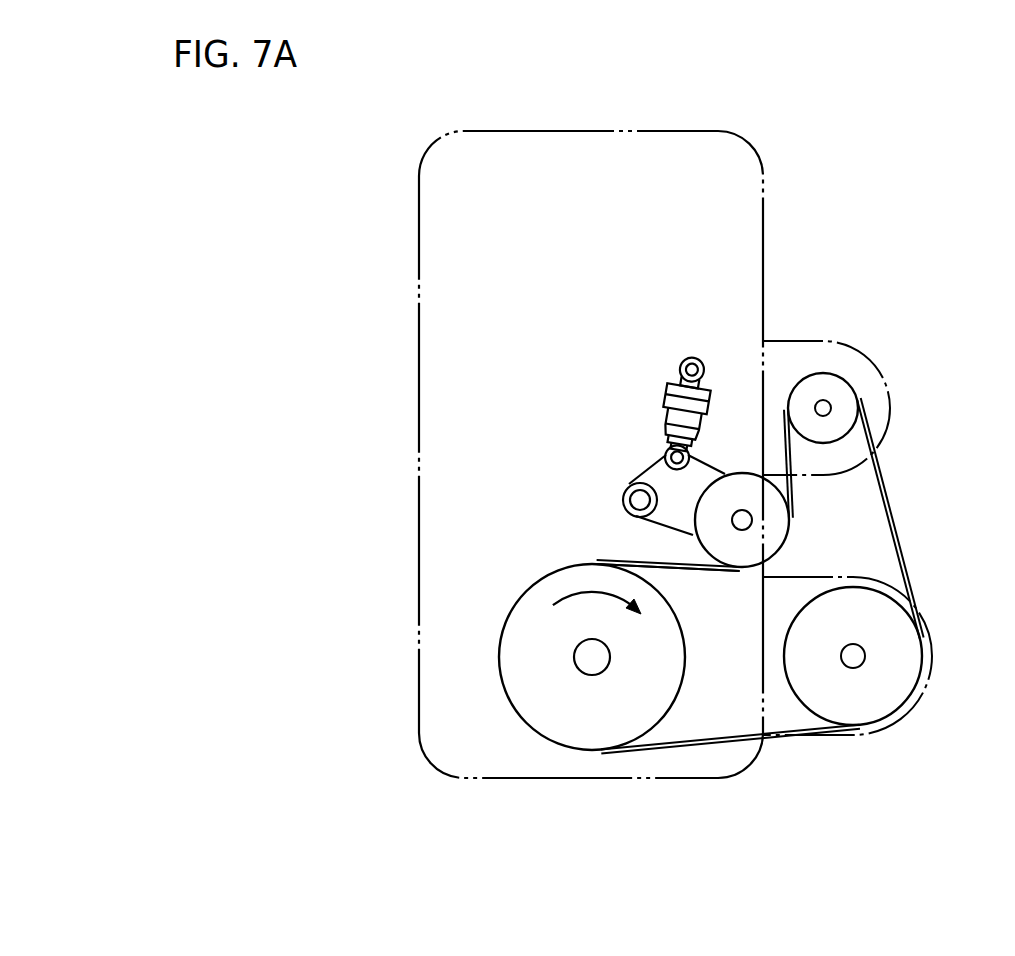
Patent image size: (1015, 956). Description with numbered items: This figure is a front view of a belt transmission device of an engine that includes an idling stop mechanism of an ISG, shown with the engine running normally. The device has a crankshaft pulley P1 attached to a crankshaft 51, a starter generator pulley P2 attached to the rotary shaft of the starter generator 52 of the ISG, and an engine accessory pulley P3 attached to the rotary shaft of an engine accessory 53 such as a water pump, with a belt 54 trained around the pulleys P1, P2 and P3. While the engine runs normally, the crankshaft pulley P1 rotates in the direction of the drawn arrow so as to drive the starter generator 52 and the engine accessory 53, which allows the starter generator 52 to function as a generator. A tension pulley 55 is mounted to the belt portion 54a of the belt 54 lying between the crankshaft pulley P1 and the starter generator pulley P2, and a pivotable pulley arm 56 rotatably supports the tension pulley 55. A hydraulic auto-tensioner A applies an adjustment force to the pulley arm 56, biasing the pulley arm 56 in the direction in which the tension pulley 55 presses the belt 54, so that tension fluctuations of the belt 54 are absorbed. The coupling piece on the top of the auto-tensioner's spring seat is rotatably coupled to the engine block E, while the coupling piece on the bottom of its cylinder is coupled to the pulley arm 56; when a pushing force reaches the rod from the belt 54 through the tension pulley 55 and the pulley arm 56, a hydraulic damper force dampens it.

The engine block E is at (435, 153).
The hydraulic auto-tensioner A is at (658, 393).
The crankshaft 51 is at (577, 663).
The starter generator 52 is at (803, 352).
The engine accessory 53 is at (920, 703).
The belt 54 is at (886, 504).
The belt portion 54a is at (643, 562).
The tension pulley 55 is at (780, 523).
The pulley arm 56 is at (655, 487).
The crankshaft pulley P1 is at (530, 606).
The starter generator pulley P2 is at (840, 390).
The engine accessory pulley P3 is at (903, 641).